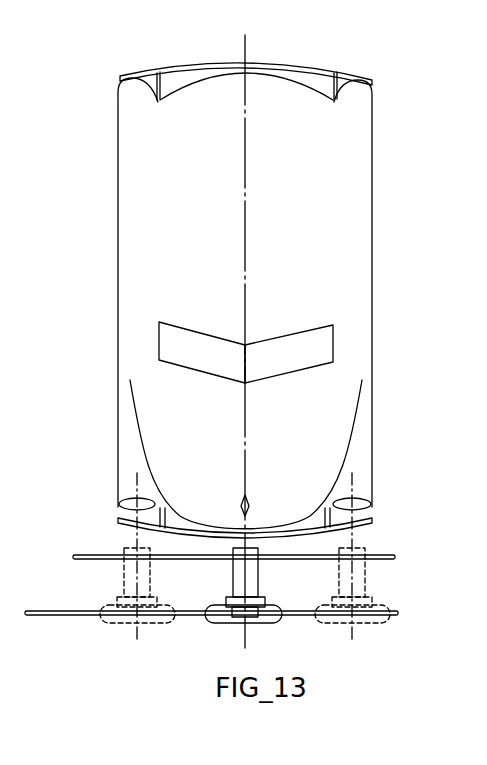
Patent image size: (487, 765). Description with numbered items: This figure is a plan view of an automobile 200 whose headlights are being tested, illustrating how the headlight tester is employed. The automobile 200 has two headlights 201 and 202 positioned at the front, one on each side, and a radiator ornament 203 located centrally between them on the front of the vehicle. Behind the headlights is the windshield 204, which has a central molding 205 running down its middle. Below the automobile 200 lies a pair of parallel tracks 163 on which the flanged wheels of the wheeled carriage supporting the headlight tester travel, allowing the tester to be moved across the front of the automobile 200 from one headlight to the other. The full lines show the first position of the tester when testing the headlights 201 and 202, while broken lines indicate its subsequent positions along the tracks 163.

The automobile 200 is at (352, 244).
The headlight 201 is at (129, 506).
The headlight 202 is at (363, 511).
The radiator ornament 203 is at (248, 500).
The windshield 204 is at (247, 366).
The central molding 205 is at (247, 357).
The tracks 163 is at (92, 557).